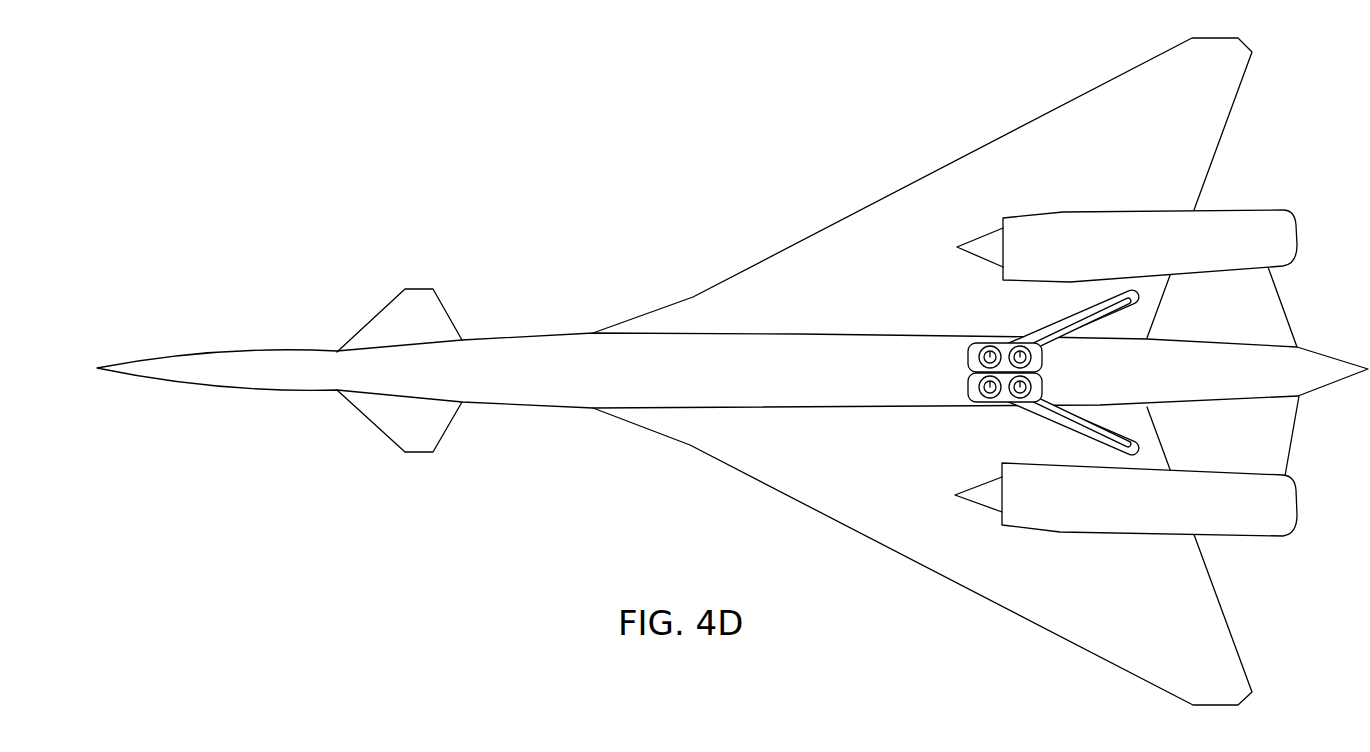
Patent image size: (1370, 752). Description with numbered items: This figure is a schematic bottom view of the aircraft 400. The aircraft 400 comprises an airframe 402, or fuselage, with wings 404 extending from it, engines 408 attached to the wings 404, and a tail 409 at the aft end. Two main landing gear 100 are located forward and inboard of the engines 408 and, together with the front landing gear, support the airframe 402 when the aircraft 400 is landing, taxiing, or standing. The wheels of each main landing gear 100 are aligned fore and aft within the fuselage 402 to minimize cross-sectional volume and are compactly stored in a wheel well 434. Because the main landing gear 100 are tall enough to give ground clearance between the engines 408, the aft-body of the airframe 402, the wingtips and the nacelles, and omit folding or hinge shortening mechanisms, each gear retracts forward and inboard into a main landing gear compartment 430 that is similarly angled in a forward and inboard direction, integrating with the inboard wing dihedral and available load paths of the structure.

The aircraft 400 is at (732, 371).
The airframe 402 is at (541, 400).
The wings 404 is at (1017, 127).
The engines 408 is at (1218, 218).
The tail 409 is at (1286, 433).
The main landing gear 100 is at (990, 351).
The main landing gear compartment 430 is at (1052, 410).
The wheel well 434 is at (968, 392).